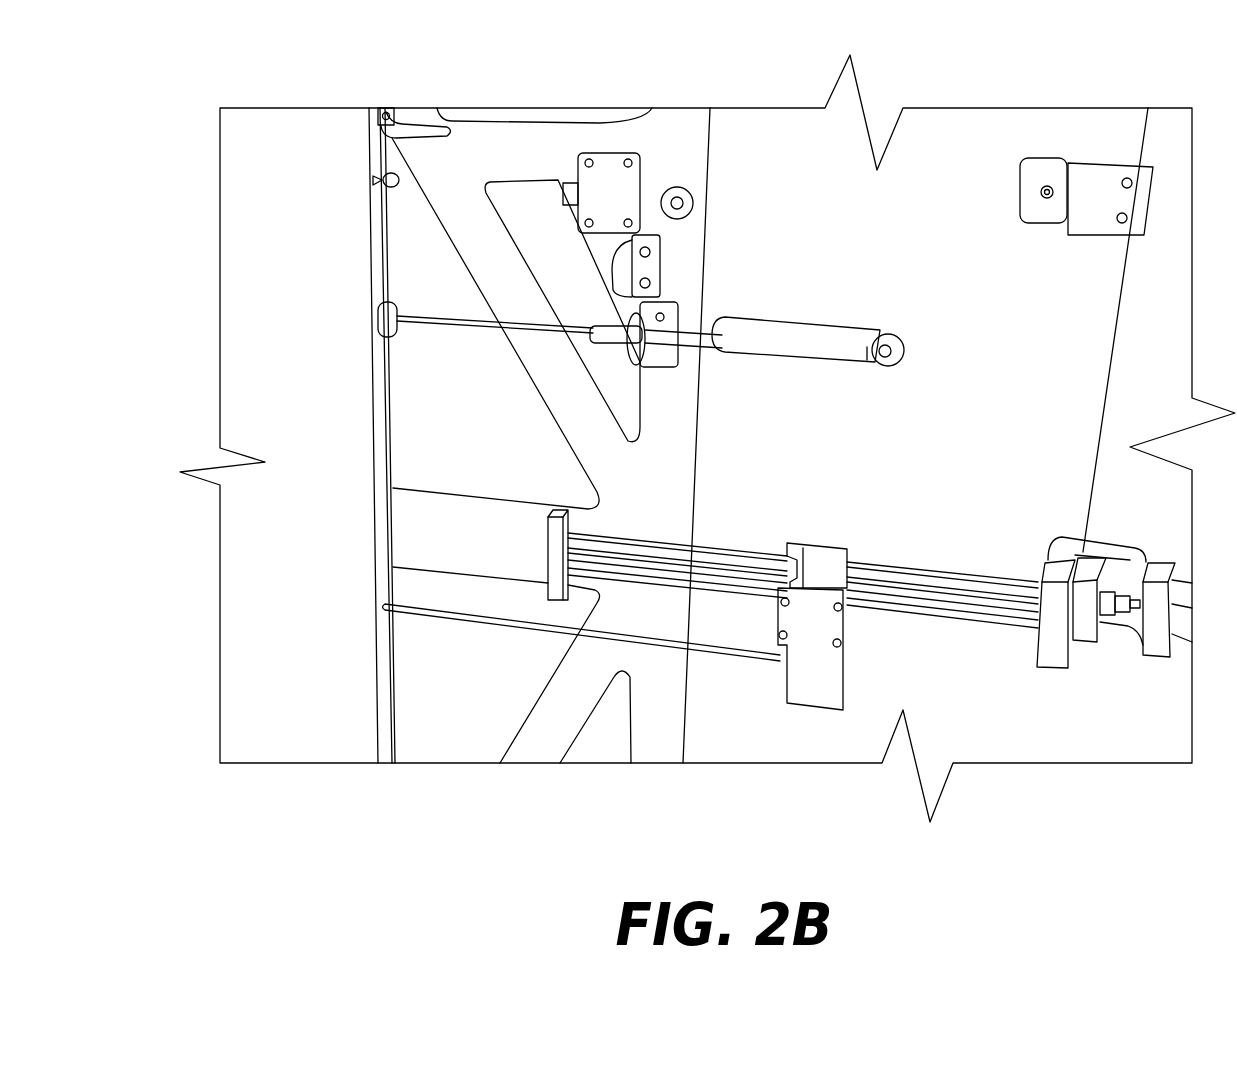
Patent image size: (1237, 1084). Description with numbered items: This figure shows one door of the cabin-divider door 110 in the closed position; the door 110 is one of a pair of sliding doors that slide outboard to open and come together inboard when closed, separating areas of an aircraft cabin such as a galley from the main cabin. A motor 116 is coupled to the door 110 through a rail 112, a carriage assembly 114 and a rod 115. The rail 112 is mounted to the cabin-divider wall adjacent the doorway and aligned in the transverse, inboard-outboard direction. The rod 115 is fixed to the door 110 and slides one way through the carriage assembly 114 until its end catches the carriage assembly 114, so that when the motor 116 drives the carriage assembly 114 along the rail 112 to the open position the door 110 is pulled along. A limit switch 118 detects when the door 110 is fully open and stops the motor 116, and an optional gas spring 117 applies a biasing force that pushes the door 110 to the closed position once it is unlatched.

The cabin-divider door 110 is at (275, 200).
The rail 112 is at (952, 627).
The carriage assembly 114 is at (817, 668).
The rod 115 is at (448, 618).
The motor 116 is at (1108, 628).
The gas spring 117 is at (738, 330).
The limit switch 118 is at (604, 190).